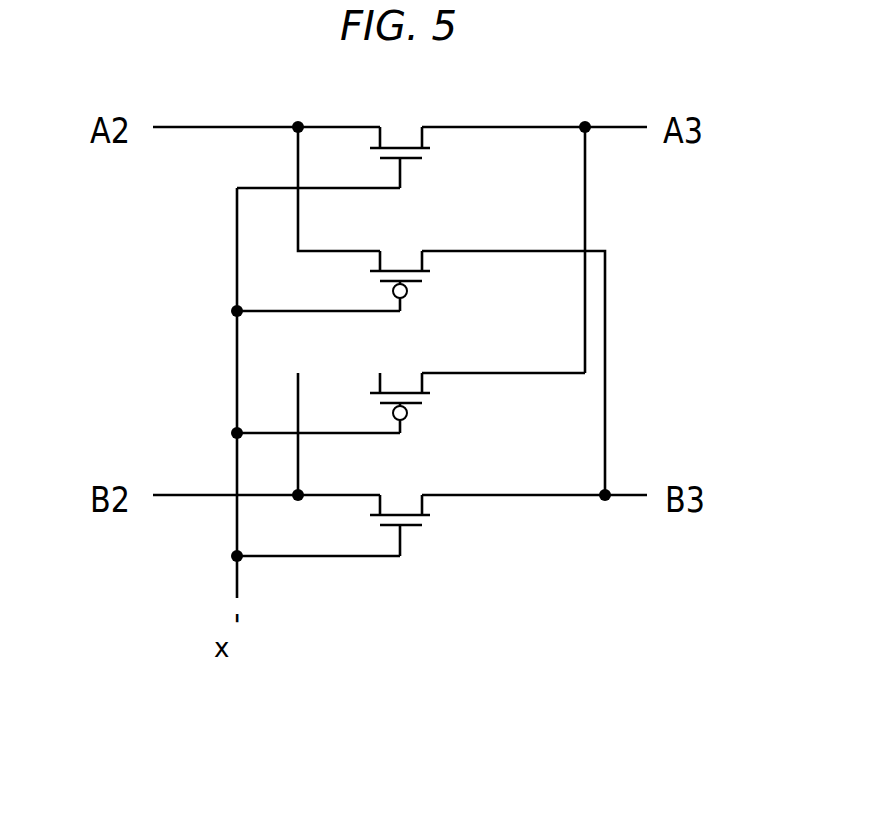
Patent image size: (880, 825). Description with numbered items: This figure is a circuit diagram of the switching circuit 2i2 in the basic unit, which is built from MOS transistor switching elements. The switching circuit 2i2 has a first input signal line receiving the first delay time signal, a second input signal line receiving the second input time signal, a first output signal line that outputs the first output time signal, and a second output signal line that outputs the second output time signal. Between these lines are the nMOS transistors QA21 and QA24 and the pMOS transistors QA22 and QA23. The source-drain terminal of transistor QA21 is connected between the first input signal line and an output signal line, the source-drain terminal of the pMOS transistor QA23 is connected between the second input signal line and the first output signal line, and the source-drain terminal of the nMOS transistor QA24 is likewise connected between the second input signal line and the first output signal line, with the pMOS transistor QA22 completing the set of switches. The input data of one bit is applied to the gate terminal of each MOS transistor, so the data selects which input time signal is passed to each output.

The nMOS transistor QA21 is at (400, 115).
The pMOS transistor QA22 is at (400, 240).
The pMOS transistor QA23 is at (400, 362).
The nMOS transistor QA24 is at (400, 483).
The switching circuit 2i2 is at (430, 763).